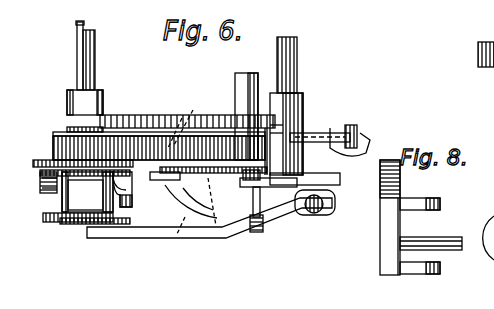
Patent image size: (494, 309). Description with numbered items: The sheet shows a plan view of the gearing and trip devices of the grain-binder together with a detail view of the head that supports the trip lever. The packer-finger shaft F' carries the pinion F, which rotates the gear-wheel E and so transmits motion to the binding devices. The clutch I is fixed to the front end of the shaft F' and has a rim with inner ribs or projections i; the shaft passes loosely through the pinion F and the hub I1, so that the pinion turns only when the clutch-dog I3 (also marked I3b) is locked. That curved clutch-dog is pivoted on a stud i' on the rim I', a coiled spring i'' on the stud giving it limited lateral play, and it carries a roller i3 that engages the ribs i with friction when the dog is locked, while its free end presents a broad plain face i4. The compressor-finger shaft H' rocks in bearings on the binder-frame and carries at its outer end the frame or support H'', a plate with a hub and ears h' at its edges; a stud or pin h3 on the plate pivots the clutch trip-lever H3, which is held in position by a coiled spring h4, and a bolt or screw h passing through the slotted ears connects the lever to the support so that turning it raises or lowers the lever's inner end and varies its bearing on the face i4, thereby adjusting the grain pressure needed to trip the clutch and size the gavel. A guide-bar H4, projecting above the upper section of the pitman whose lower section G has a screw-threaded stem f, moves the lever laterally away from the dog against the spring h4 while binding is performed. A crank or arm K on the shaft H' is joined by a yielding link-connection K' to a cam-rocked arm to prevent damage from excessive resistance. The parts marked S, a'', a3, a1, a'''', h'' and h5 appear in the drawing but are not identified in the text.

In FIG. 6, the shaft F' is at (93, 55).
In FIG. 6, the gear-wheel E is at (187, 108).
In FIG. 6, the pinion F is at (146, 146).
In FIG. 6, the rim I' is at (83, 131).
In FIG. 6, the shaft S is at (172, 121).
In FIG. 6, the arm a'' is at (187, 116).
In FIG. 6, the post a3 is at (246, 109).
In FIG. 6, the short shaft H' is at (294, 106).
In FIG. 6, the crank or arm K is at (320, 124).
In FIG. 6, the yielding link-connection K' is at (360, 140).
In FIG. 6, the clutch-dog I3 is at (38, 179).
In FIG. 6, the stud i' is at (42, 186).
In FIG. 6, the coiled spring i'' is at (45, 199).
In FIG. 6, the hub I1 is at (85, 190).
In FIG. 6, the clutch I is at (85, 195).
In FIG. 6, the ribs or projections i is at (86, 232).
In FIG. 6, the broad plain face i4 is at (129, 189).
In FIG. 6, the clutch-dog I3b is at (134, 177).
In FIG. 6, the roller i3 is at (139, 208).
In FIG. 6, the clutch trip-lever H3 is at (209, 224).
In FIG. 6, the pitman section G is at (228, 212).
In FIG. 6, the arm a1 is at (187, 256).
In FIG. 6, the screw-threaded stem f is at (165, 191).
In FIG. 6, the arm a'''' is at (165, 213).
In FIG. 6, the guide-bar H4 is at (258, 190).
In FIG. 6, the stud or pin h3 is at (249, 202).
In FIG. 6, the coiled spring h4 is at (257, 239).
In FIG. 6, the frame or support H'' is at (305, 177).
In FIG. 8, the frame or support H'' is at (378, 217).
In FIG. 6, the bolt or screw h is at (315, 217).
In FIG. 6, the pin h'' is at (349, 177).
In FIG. 6, the ears h' is at (349, 203).
In FIG. 8, the ears h' is at (427, 234).
In FIG. 8, the threaded arm h5 is at (431, 234).